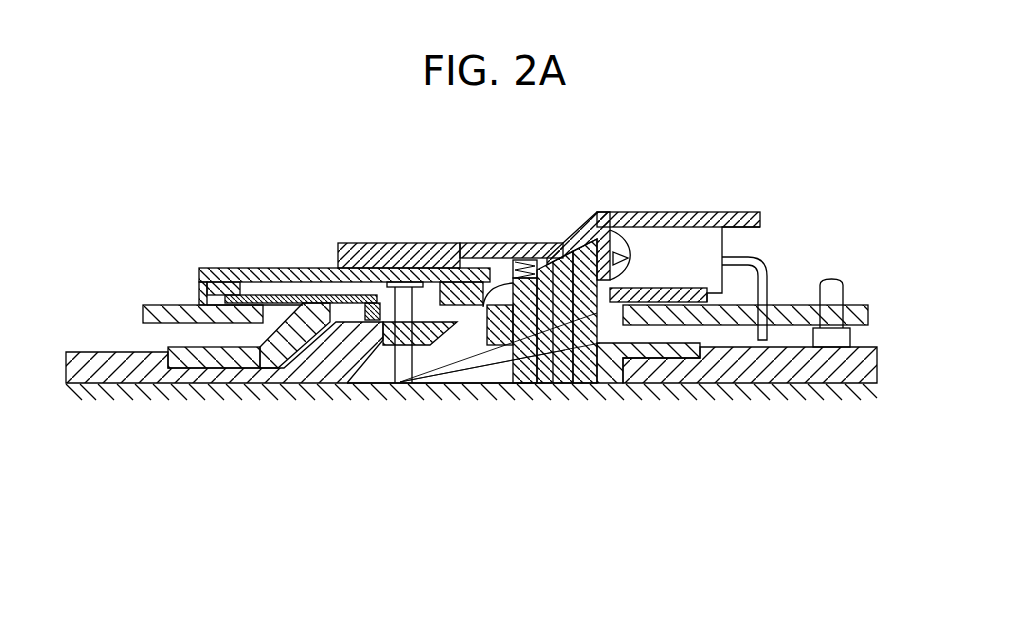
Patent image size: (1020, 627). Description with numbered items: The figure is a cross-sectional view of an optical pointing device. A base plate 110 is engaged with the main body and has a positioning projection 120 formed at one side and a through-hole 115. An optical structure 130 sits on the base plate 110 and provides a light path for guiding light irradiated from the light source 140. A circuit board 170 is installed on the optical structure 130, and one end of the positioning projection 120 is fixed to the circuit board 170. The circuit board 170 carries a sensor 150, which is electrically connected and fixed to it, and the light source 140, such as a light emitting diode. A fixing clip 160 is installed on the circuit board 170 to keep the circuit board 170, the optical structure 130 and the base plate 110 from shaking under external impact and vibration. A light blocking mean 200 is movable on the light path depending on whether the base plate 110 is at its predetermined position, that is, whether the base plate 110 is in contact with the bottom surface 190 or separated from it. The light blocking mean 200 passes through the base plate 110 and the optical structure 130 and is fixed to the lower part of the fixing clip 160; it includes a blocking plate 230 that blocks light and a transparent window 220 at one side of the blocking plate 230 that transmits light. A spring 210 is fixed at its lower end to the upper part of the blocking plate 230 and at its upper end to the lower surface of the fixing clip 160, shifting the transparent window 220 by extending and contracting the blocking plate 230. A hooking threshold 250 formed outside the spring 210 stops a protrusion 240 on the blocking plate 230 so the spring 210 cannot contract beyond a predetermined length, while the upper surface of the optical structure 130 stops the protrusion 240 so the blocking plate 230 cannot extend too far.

The base plate 110 is at (295, 373).
The through-hole 115 is at (376, 372).
The positioning projection 120 is at (832, 292).
The optical structure 130 is at (333, 313).
The light source 140 is at (680, 243).
The sensor 150 is at (270, 275).
The fixing clip 160 is at (622, 235).
The circuit board 170 is at (160, 317).
The bottom surface 190 is at (788, 418).
The light blocking mean 200 is at (528, 370).
The spring 210 is at (470, 310).
The transparent window 220 is at (553, 380).
The blocking plate 230 is at (525, 350).
The protrusion 240 is at (497, 345).
The hooking threshold 250 is at (621, 348).